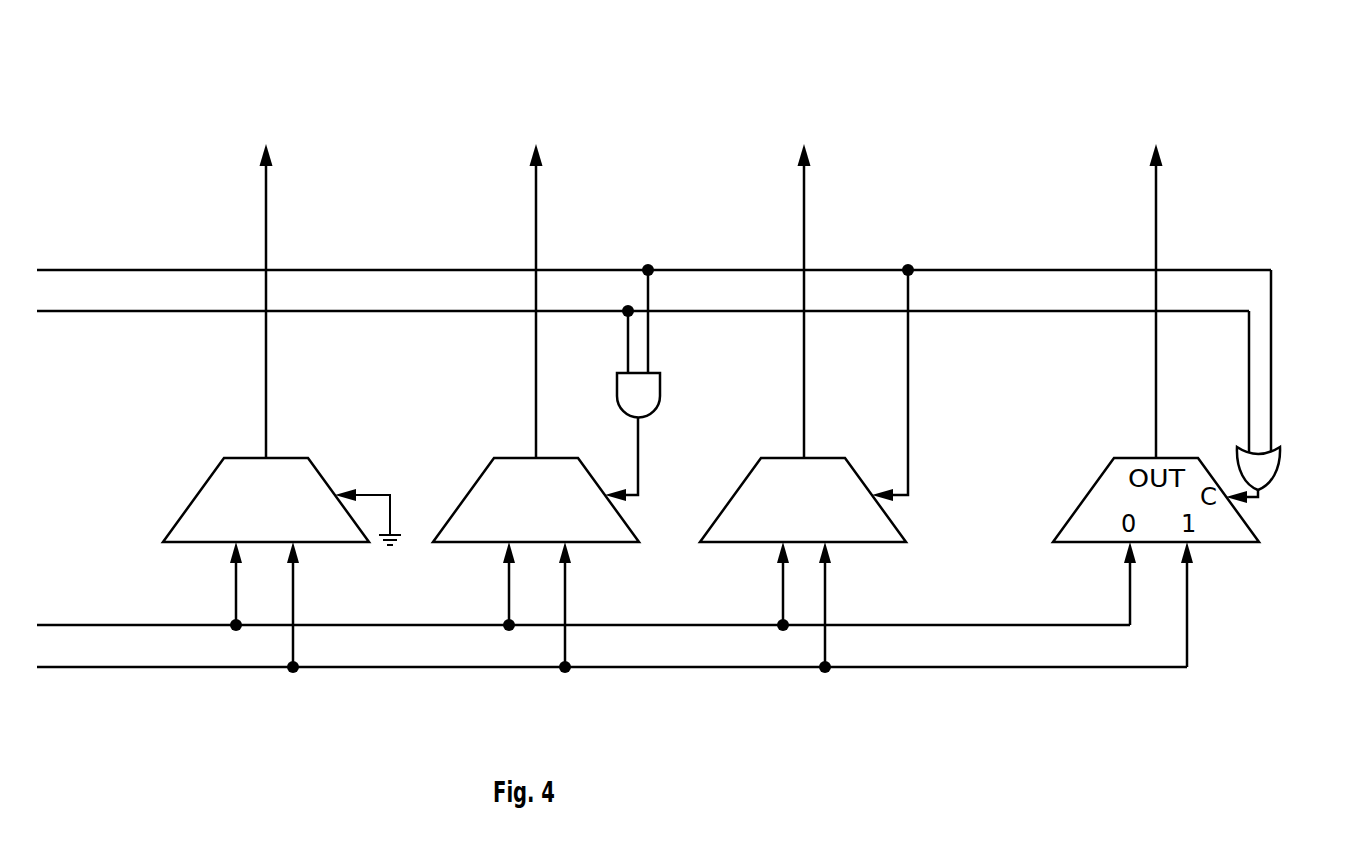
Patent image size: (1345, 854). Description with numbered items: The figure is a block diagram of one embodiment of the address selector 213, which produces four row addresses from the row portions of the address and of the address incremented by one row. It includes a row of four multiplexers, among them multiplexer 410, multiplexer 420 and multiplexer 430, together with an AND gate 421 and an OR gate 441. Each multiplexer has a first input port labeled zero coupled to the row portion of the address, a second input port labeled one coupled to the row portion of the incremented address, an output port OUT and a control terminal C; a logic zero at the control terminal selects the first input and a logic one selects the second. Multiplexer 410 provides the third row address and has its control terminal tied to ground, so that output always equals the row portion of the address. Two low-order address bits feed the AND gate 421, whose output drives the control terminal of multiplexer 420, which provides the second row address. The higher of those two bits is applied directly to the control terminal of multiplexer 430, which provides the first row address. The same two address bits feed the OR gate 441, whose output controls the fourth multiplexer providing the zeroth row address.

The address selector 213 is at (561, 92).
The multiplexer 410 is at (278, 488).
The multiplexer 420 is at (495, 457).
The AND gate 421 is at (617, 373).
The multiplexer 430 is at (778, 457).
The OR gate 441 is at (1280, 450).